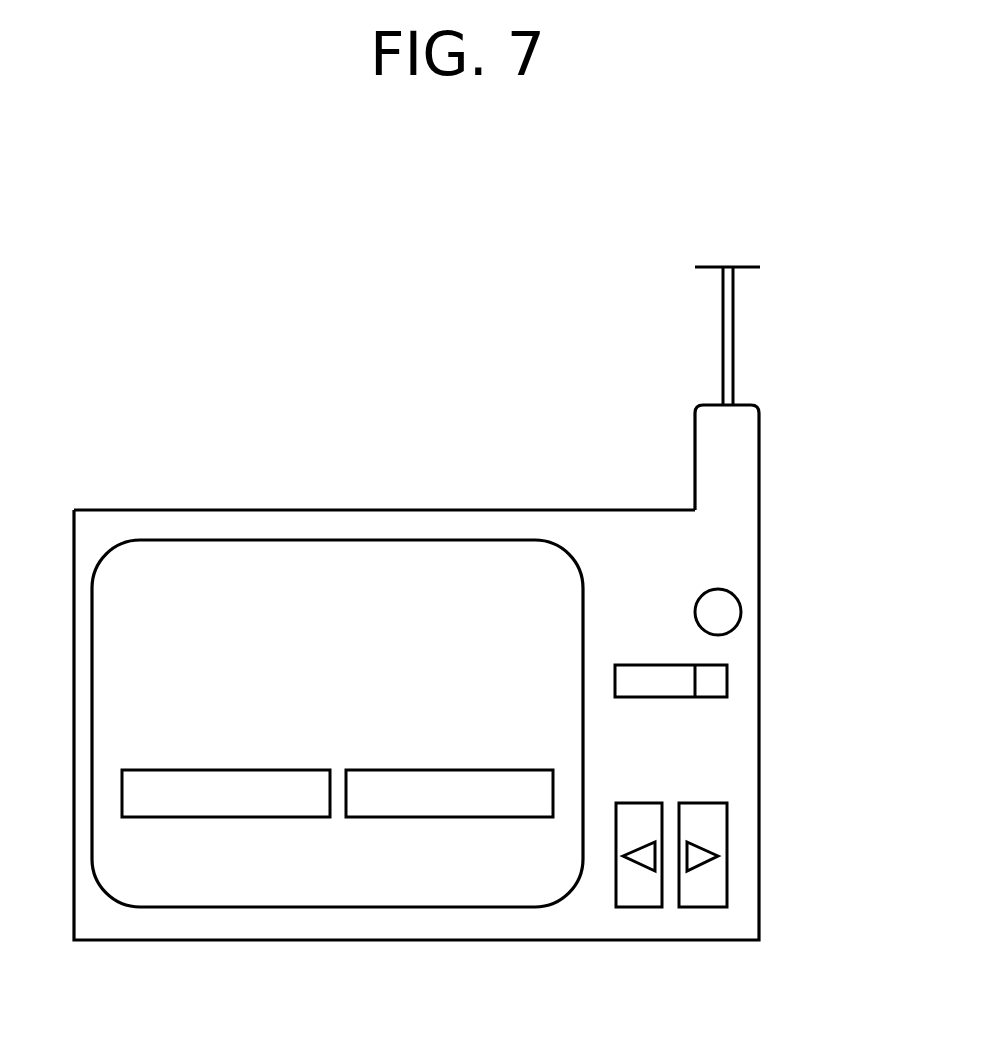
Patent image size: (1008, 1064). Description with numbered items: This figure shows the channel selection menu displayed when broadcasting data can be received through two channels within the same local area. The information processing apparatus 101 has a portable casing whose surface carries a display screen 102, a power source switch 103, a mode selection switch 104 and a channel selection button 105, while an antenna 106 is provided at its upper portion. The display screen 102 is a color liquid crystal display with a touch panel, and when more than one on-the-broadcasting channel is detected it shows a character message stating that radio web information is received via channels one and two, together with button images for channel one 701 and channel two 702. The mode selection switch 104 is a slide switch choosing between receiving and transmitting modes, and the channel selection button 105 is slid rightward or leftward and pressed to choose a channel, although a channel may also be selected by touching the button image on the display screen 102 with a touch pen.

The information processing apparatus 101 is at (246, 490).
The display screen 102 is at (420, 563).
The power source switch 103 is at (730, 610).
The mode selection switch 104 is at (727, 678).
The channel selection button 105 is at (727, 850).
The antenna 106 is at (735, 331).
The channel 1 selection button 701 is at (285, 817).
The channel 2 selection button 702 is at (443, 817).